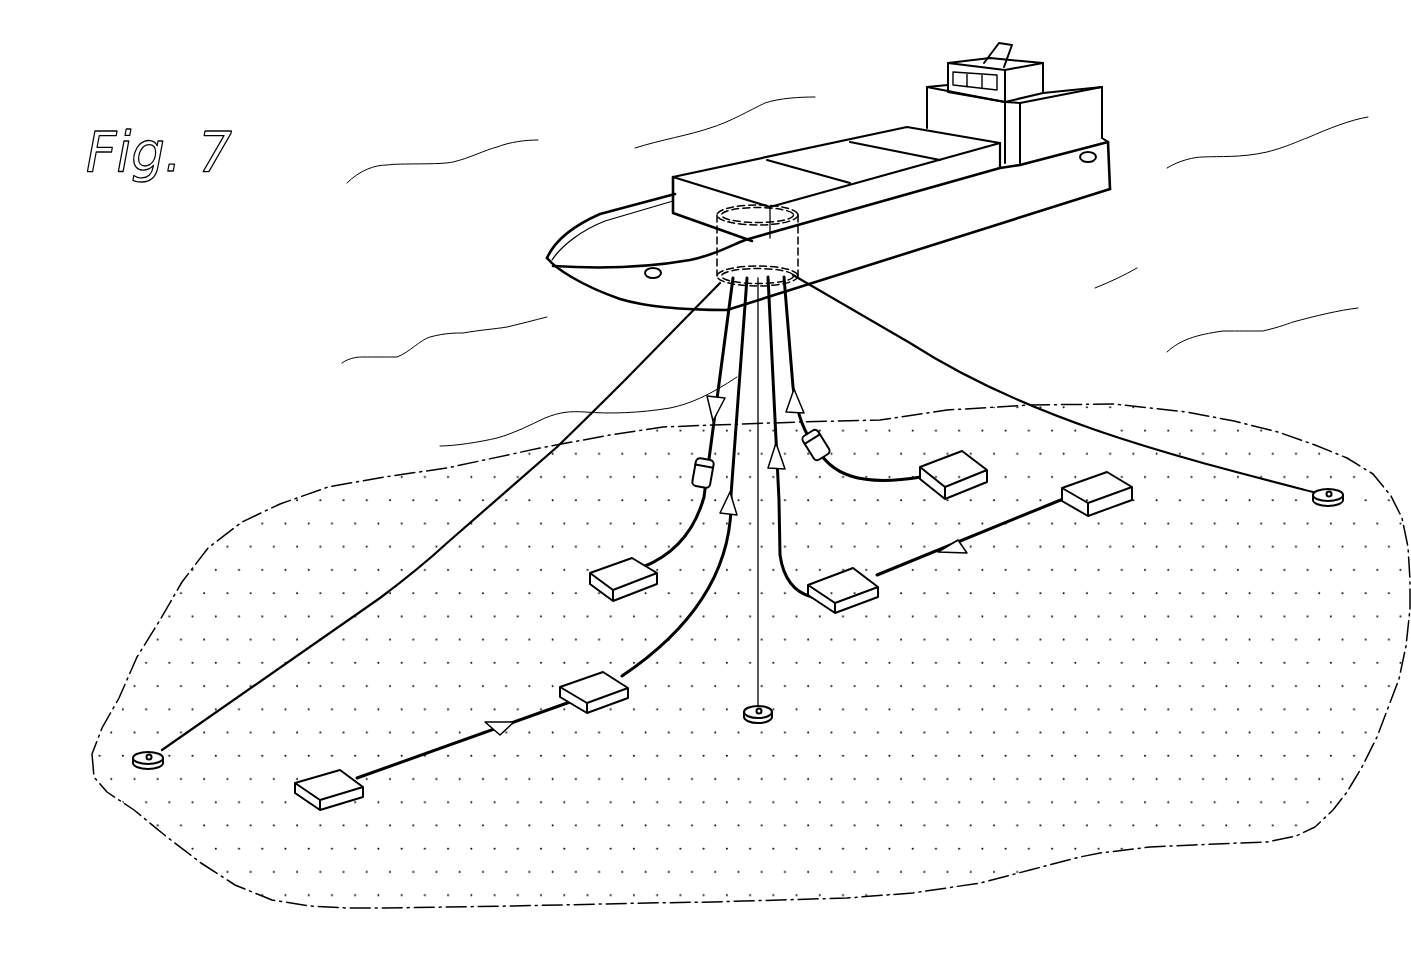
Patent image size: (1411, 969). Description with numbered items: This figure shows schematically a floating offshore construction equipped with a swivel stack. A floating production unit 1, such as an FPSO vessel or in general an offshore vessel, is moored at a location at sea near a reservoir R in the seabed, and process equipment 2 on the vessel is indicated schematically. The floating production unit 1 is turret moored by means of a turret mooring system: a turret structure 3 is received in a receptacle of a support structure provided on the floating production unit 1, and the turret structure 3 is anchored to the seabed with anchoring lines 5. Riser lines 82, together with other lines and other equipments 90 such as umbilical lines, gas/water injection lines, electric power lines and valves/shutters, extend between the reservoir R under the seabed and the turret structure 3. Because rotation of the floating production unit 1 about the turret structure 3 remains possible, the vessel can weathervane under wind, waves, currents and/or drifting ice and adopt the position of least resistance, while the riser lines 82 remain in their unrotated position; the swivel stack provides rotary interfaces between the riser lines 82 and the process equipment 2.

The floating production unit 1 is at (940, 110).
The process equipment 2 is at (810, 162).
The turret structure 3 is at (799, 259).
The anchoring lines 5 is at (997, 388).
The riser lines 82 is at (795, 548).
The other lines and other equipments 90 is at (697, 467).
The reservoir R is at (1188, 807).